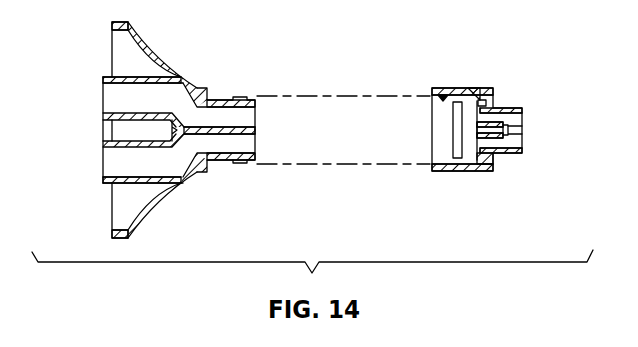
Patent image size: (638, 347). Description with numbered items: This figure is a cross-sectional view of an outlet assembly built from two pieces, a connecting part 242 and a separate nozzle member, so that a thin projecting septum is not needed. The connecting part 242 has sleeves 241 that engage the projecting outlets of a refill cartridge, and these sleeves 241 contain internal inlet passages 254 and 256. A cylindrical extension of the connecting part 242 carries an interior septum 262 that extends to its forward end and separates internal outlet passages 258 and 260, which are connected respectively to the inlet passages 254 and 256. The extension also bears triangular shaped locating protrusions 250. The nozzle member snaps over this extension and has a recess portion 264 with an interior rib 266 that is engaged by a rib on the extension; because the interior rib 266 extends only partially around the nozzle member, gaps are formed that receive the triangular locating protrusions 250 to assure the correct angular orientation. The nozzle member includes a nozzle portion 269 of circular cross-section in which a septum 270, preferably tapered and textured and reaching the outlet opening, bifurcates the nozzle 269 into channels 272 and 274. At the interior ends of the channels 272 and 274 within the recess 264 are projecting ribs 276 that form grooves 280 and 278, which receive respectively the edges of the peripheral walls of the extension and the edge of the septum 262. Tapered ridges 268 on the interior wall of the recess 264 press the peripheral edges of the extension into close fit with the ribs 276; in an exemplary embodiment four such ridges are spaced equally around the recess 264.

The sleeves 241 is at (107, 77).
The connecting part 242 is at (157, 55).
The triangular shaped locating protrusions 250 is at (238, 167).
The internal passage 254 is at (110, 97).
The internal passage 256 is at (110, 163).
The internal outlet passage 258 is at (253, 108).
The internal outlet passage 260 is at (253, 145).
The interior septum 262 is at (205, 127).
The recess portion 264 is at (440, 115).
The interior rib 266 is at (450, 135).
The tapered ridges 268 is at (437, 90).
The nozzle portion 269 is at (500, 108).
The septum 270 is at (515, 137).
The channel 272 is at (515, 118).
The channel 274 is at (515, 148).
The projecting ribs 276 is at (473, 92).
The groove 278 is at (475, 128).
The groove 280 is at (483, 103).